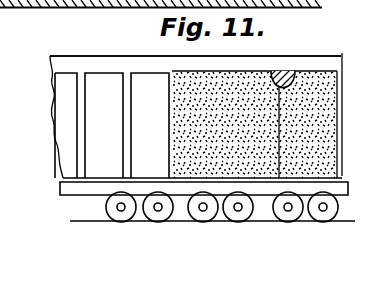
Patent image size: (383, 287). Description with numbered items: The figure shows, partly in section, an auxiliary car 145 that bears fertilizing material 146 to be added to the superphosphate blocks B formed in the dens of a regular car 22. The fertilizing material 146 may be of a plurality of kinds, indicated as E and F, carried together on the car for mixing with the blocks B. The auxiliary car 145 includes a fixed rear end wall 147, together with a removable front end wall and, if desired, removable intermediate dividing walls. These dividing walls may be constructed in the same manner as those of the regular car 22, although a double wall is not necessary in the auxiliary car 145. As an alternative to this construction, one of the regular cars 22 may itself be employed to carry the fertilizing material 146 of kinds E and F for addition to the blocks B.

The car 22 is at (40, 113).
The blocks B is at (112, 125).
The fertilizing material E is at (297, 72).
The fertilizing material F is at (271, 73).
The auxiliary car 145 is at (350, 178).
The fertilizing material 146 is at (330, 98).
The fixed rear end wall 147 is at (342, 136).